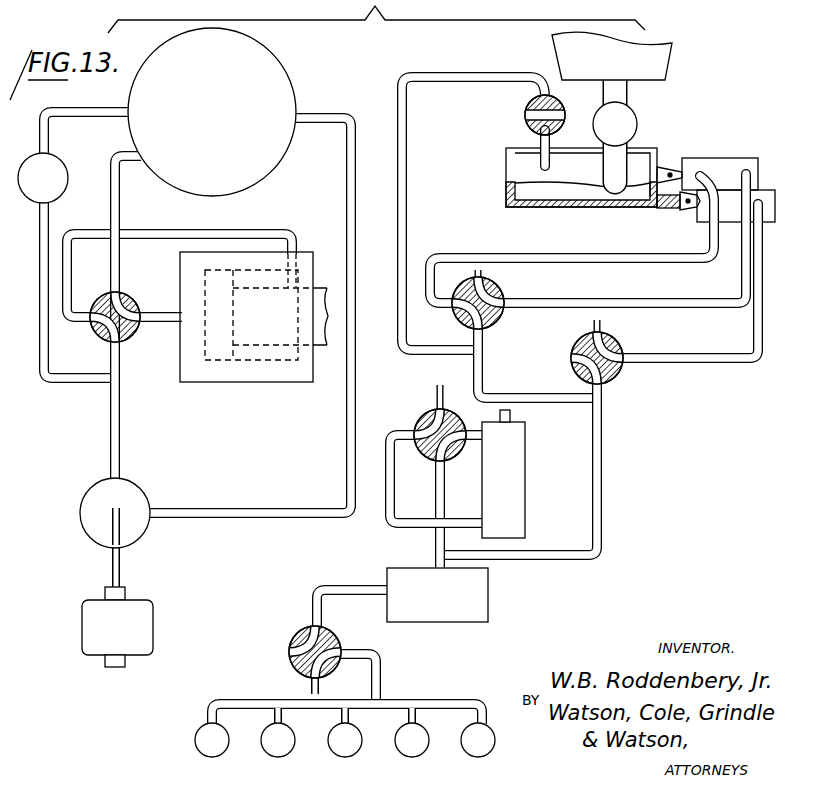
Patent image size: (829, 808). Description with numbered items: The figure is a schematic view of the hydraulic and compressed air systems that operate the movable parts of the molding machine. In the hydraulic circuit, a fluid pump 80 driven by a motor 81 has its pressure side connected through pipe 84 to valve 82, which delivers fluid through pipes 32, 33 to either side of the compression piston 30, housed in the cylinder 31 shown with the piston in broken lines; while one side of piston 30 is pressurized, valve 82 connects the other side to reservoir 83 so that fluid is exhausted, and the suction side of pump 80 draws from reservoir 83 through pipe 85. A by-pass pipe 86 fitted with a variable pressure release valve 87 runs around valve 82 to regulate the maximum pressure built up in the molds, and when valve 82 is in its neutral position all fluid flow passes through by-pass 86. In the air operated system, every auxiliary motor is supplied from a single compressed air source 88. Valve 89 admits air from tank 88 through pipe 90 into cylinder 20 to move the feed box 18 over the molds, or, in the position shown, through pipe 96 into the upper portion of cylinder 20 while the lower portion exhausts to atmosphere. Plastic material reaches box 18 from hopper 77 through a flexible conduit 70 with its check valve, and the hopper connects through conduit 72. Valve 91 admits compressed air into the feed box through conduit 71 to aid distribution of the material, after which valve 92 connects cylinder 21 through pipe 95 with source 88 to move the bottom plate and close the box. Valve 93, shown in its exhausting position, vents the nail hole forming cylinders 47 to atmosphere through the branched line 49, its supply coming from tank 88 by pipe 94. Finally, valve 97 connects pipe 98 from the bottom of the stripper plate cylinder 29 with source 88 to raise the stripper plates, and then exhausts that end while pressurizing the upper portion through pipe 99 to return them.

The box 18 is at (522, 169).
The hydraulic motor 20 is at (718, 164).
The hydraulic motor 21 is at (733, 223).
The cylinder 29 is at (522, 472).
The piston 30 is at (221, 358).
The cylinder housing 31 is at (278, 383).
The pipe 32 is at (153, 311).
The pipe 33 is at (255, 231).
The cylinders 47 is at (265, 760).
The manifold pipe 49 is at (236, 703).
The conduit 70 is at (623, 148).
The conduit 71 is at (402, 116).
The pipe 72 is at (630, 118).
The hopper 77 is at (668, 53).
The fluid pump 80 is at (138, 528).
The motor 81 is at (148, 627).
The valve 82 is at (131, 341).
The reservoir 83 is at (276, 74).
The pipe 84 is at (122, 447).
The pipe 85 is at (354, 412).
The by-pass pipe 86 is at (50, 229).
The variable pressure release valve 87 is at (60, 168).
The compressed air source 88 is at (485, 607).
The valve 89 is at (501, 321).
The pipe 90 is at (572, 302).
The valve 91 is at (525, 113).
The valve 92 is at (623, 372).
The valve 93 is at (298, 636).
The pipe 94 is at (373, 673).
The pipe 95 is at (707, 364).
The pipe 96 is at (467, 256).
The valve 97 is at (420, 417).
The pipe 98 is at (397, 523).
The pipe 99 is at (439, 504).